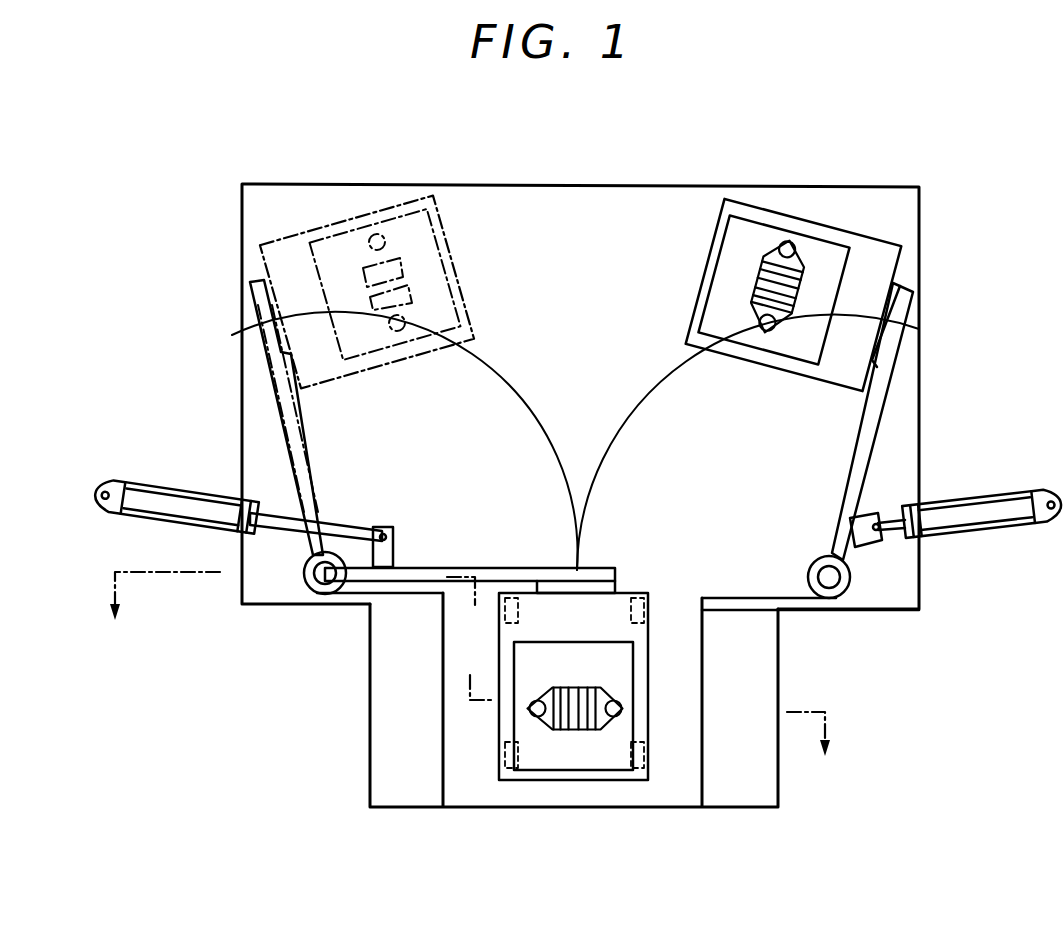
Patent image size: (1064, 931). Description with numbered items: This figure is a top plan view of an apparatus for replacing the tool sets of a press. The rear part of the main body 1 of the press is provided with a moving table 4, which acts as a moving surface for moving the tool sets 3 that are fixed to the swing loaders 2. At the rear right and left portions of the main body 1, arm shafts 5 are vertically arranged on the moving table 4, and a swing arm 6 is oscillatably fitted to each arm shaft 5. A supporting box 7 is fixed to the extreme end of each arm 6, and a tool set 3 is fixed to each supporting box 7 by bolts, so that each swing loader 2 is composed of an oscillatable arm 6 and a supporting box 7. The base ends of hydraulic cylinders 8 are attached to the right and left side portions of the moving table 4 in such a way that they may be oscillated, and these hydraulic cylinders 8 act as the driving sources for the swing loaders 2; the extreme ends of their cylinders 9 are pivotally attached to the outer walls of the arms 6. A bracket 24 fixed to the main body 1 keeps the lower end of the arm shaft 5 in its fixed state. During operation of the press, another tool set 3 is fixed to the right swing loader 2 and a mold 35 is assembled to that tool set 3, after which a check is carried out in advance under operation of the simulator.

The main body 1 is at (662, 797).
The swing loader 2 is at (436, 563).
The tool set 3 is at (405, 214).
The moving table 4 is at (621, 196).
The arm shaft 5 is at (325, 575).
The swing arm 6 is at (315, 497).
The supporting box 7 is at (713, 343).
The hydraulic cylinder 8 is at (192, 527).
The cylinder 9 is at (277, 528).
The bracket 24 is at (796, 598).
The mold 35 is at (793, 297).